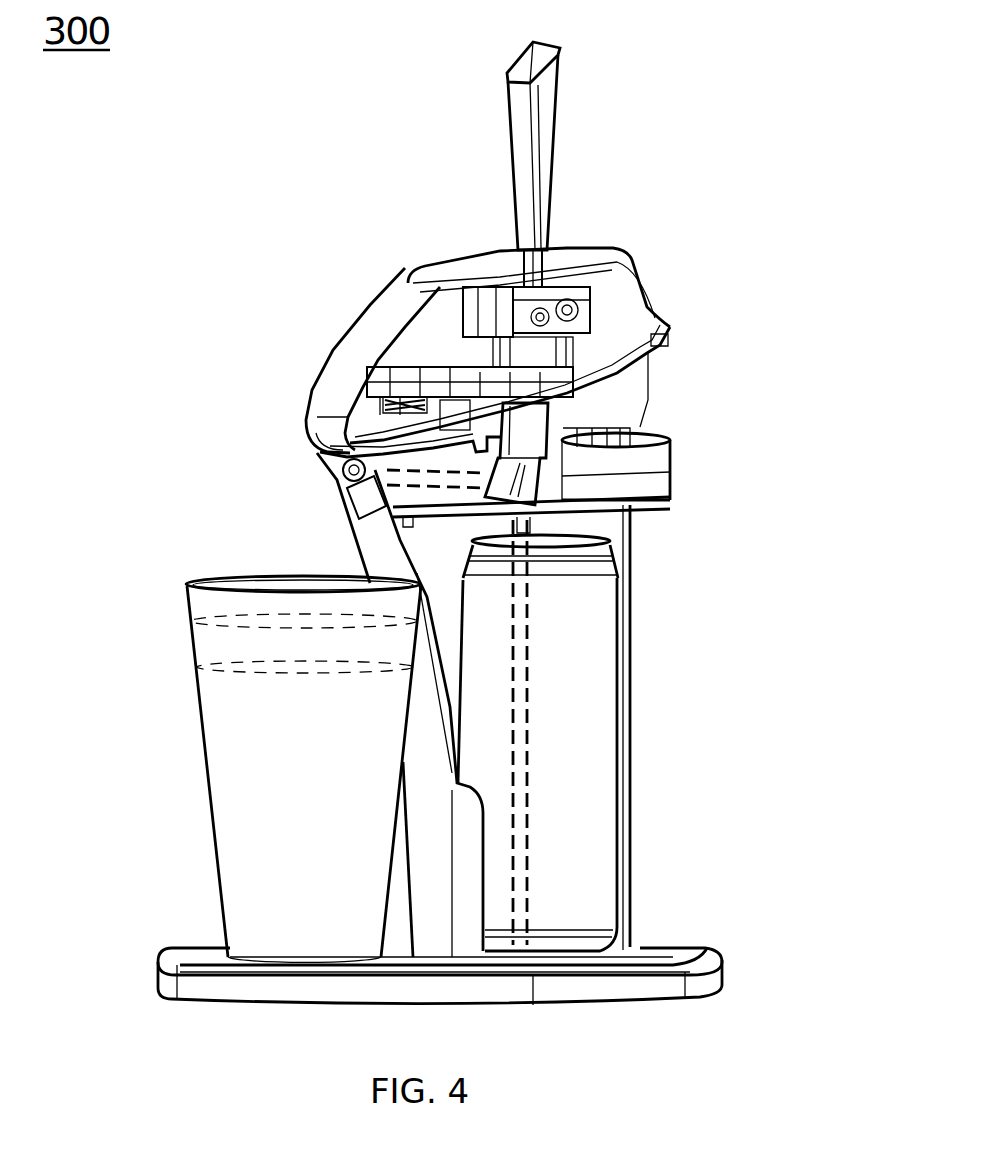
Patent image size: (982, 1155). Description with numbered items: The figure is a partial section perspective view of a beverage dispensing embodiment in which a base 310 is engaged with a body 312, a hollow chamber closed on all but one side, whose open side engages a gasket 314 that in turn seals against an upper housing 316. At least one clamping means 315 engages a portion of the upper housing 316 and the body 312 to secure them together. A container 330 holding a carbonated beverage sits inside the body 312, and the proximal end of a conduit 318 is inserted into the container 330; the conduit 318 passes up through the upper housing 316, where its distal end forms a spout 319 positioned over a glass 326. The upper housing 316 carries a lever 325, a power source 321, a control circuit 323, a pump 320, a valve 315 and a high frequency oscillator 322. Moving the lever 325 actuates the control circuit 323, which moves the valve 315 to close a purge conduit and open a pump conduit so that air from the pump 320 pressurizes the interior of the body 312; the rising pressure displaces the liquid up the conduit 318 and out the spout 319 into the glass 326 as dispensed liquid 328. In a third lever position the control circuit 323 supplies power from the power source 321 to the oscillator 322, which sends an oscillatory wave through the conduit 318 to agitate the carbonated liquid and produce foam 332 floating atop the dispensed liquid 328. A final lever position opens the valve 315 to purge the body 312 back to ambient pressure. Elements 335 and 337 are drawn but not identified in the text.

The base 310 is at (703, 977).
The body 312 is at (630, 619).
The gasket 314 is at (638, 505).
The clamping means / valve 315 is at (630, 435).
The upper housing 316 is at (573, 255).
The conduit 318 is at (552, 452).
The spout 319 is at (349, 517).
The pump 320 is at (528, 308).
The power source 321 is at (390, 435).
The oscillator 322 is at (343, 425).
The control circuit 323 is at (410, 388).
The lever 325 is at (522, 105).
The glass 326 is at (208, 810).
The dispensed liquid 328 is at (222, 698).
The container 330 is at (590, 688).
The foam 332 is at (245, 648).
The collar 335 is at (667, 463).
The valve 337 is at (603, 297).